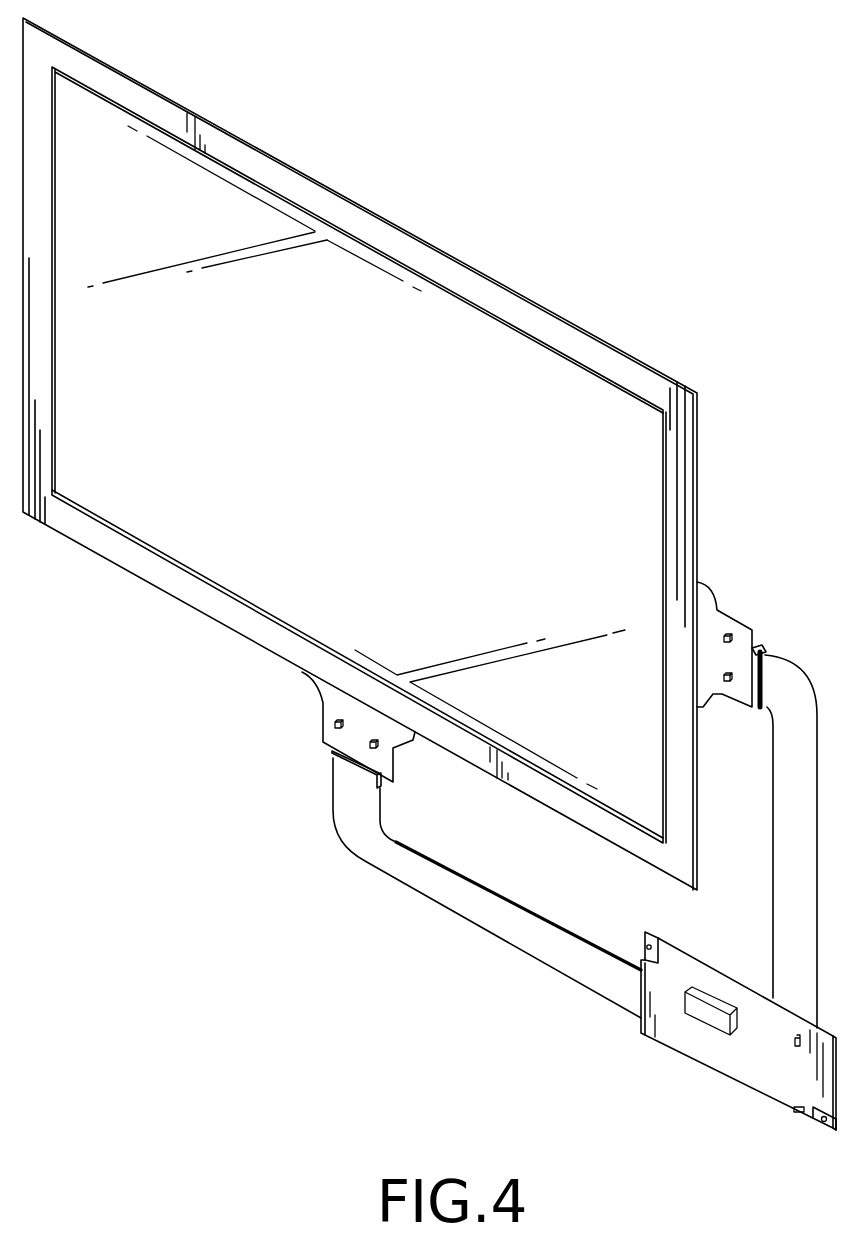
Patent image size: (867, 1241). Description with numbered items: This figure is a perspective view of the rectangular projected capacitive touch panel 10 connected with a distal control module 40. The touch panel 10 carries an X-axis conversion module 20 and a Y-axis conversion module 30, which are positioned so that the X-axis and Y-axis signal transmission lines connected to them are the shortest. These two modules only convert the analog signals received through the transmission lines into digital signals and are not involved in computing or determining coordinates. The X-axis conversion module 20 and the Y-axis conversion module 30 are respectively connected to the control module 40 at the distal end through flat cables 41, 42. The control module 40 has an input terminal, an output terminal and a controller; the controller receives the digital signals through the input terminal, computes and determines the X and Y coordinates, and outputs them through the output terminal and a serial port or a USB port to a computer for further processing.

The touch panel 10 is at (493, 295).
The X-axis conversion module 20 is at (730, 630).
The Y-axis conversion module 30 is at (328, 738).
The control module 40 is at (692, 1043).
The flat cable 41 is at (782, 857).
The flat cable 42 is at (492, 928).